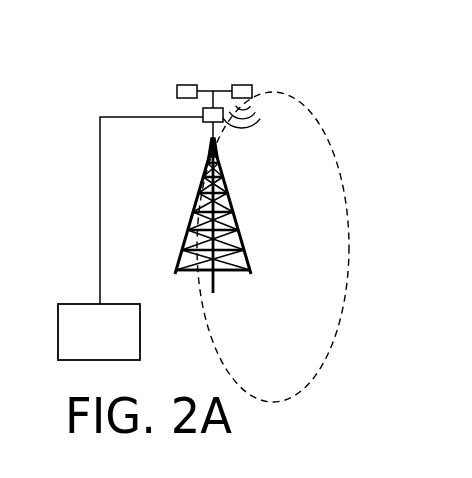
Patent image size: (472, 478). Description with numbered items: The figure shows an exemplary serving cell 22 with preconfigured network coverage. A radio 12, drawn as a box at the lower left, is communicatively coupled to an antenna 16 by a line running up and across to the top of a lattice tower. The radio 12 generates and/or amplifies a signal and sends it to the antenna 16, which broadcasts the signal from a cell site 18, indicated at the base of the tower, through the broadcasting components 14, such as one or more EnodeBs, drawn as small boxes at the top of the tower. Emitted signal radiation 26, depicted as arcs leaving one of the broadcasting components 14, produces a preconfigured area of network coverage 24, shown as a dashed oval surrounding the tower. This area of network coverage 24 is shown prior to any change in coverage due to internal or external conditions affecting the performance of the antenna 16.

The radio 12 is at (73, 331).
The broadcasting component 14 is at (186, 85).
The antenna 16 is at (199, 203).
The cell site 18 is at (233, 278).
The serving cell 22 is at (102, 93).
The preconfigured area of network coverage 24 is at (310, 380).
The emitted signal radiation 26 is at (258, 122).